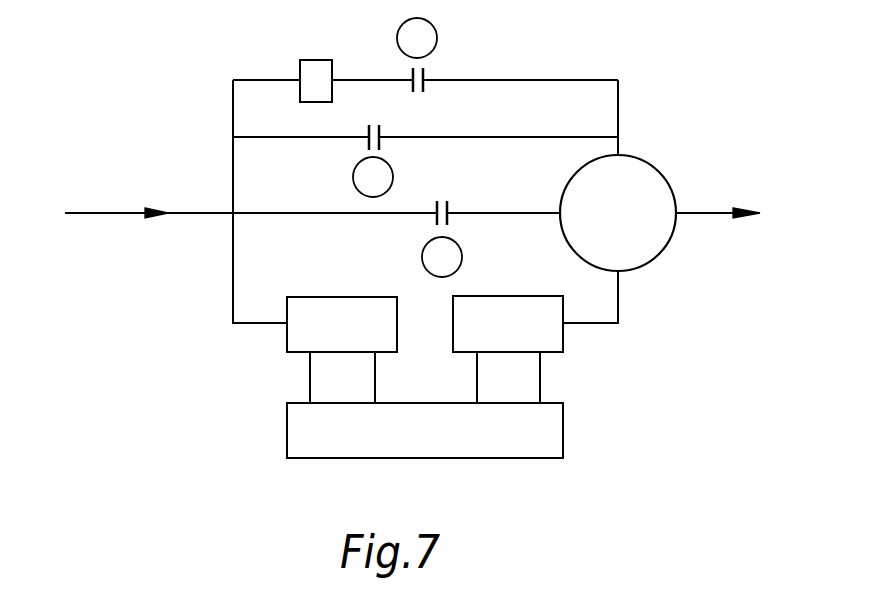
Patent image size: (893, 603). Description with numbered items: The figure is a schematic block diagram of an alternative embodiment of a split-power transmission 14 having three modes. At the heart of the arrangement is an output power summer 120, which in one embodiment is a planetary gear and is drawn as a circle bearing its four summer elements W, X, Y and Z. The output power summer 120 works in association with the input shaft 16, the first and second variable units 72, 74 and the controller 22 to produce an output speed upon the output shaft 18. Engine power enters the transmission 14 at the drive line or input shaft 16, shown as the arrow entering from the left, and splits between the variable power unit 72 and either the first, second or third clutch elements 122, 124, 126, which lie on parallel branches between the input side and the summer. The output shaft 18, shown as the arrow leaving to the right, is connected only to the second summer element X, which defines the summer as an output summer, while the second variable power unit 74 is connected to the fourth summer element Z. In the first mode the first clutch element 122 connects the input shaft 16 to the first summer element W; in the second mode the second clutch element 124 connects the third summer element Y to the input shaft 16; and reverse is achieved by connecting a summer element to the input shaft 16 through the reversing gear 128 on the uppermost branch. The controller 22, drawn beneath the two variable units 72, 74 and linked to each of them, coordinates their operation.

The split-power transmission 14 is at (195, 62).
The input shaft 16 is at (108, 213).
The output shaft 18 is at (704, 213).
The controller 22 is at (518, 458).
The first variable unit 72 is at (287, 345).
The second variable unit 74 is at (553, 352).
The output power summer 120 is at (663, 250).
The first clutch element 122 is at (448, 207).
The second clutch element 124 is at (380, 130).
The third clutch element 126 is at (424, 74).
The reversing gear 128 is at (305, 60).